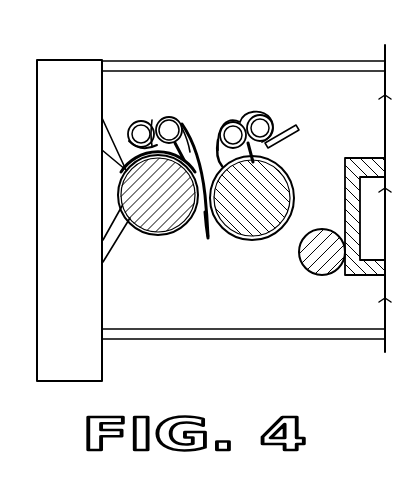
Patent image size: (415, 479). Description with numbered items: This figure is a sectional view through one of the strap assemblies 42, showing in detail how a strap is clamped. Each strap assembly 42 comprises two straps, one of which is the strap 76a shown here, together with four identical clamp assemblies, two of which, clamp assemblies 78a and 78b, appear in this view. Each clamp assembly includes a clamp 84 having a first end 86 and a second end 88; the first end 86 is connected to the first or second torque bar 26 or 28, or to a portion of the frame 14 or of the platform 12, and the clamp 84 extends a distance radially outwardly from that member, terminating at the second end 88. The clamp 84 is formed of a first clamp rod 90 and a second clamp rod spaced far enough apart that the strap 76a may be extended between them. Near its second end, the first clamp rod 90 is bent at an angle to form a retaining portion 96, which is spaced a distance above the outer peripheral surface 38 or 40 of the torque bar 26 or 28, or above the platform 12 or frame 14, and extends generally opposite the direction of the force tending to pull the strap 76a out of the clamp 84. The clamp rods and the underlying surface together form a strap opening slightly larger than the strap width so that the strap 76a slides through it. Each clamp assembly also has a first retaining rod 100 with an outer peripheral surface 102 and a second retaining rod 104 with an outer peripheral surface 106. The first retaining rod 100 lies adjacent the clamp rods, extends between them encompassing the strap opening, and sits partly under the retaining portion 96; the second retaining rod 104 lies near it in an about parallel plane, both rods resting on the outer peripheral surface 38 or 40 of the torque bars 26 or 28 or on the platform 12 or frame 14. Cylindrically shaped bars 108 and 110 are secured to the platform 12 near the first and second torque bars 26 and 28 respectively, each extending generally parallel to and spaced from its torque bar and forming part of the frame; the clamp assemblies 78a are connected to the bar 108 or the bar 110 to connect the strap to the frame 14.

The platform 12 is at (366, 158).
The frame 14 is at (69, 74).
The first torque bar 26 is at (241, 226).
The second torque bar 28 is at (233, 238).
The outer peripheral surface 38 is at (290, 80).
The outer peripheral surface 40 is at (259, 112).
The strap assembly 42 is at (207, 128).
The strap 76a is at (197, 231).
The clamp assembly 78a is at (143, 103).
The clamp assembly 78b is at (285, 120).
The clamp 84 is at (177, 108).
The first end 86 is at (268, 114).
The second end 88 is at (258, 224).
The first clamp rod 90 is at (128, 172).
The retaining portion 96 is at (278, 118).
The first retaining rod 100 is at (190, 120).
The outer peripheral surface 102 is at (168, 126).
The second retaining rod 104 is at (135, 141).
The outer peripheral surface 106 is at (128, 127).
The cylindrically shaped bar 108 is at (156, 237).
The cylindrically shaped bar 110 is at (150, 226).